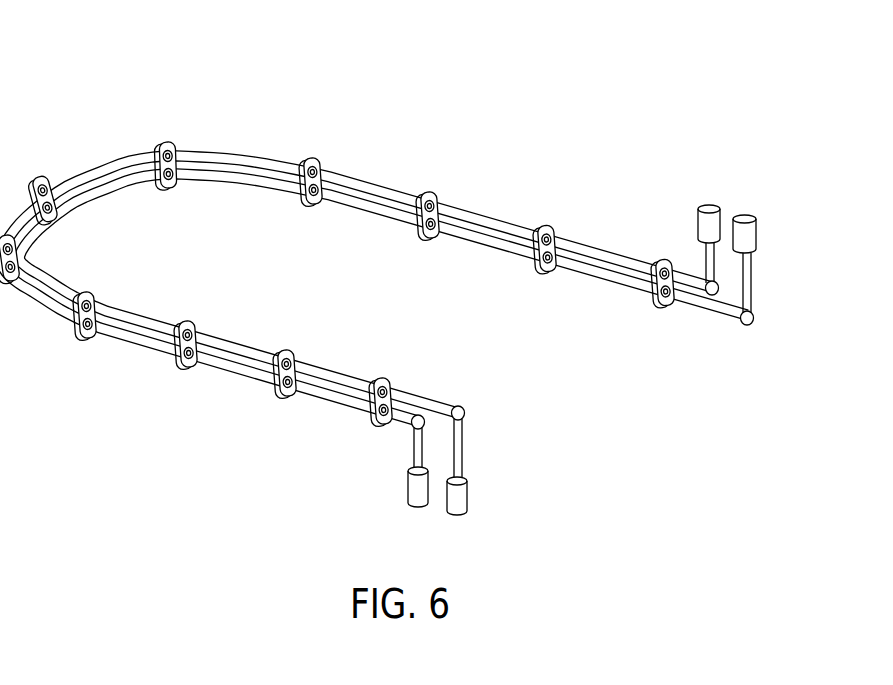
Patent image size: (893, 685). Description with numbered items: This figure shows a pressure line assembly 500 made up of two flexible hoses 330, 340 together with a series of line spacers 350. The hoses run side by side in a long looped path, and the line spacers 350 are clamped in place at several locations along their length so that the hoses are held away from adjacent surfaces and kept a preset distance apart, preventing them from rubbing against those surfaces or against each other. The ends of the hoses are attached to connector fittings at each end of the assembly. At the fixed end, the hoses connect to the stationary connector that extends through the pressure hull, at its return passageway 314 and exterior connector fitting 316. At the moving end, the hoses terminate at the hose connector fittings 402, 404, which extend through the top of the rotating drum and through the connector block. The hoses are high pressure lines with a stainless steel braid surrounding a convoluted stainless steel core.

The pressure line assembly 500 is at (74, 82).
The flexible hose 330 is at (147, 340).
The flexible hose 340 is at (152, 325).
The line spacer 350 is at (282, 397).
The fluid passageway 314 is at (417, 485).
The exterior connector fitting 316 is at (463, 493).
The hose connector fitting 402 is at (700, 222).
The hose connector fitting 404 is at (745, 237).